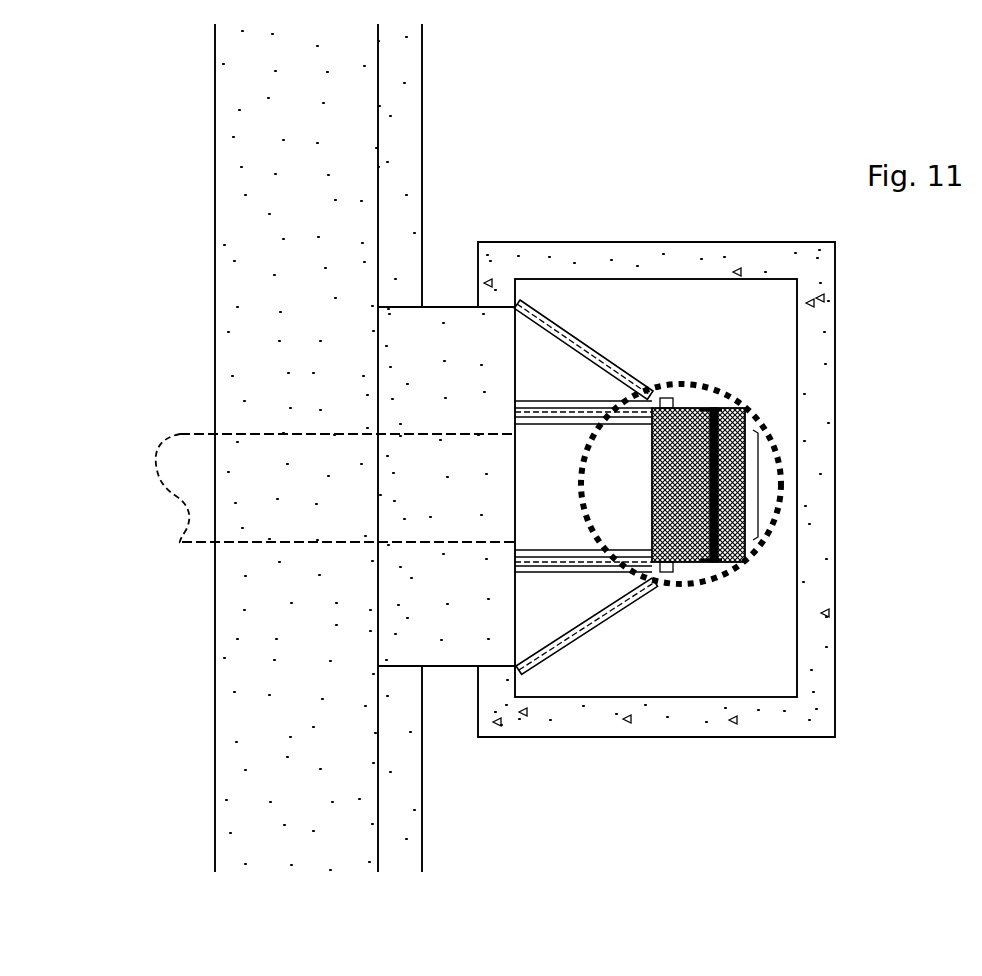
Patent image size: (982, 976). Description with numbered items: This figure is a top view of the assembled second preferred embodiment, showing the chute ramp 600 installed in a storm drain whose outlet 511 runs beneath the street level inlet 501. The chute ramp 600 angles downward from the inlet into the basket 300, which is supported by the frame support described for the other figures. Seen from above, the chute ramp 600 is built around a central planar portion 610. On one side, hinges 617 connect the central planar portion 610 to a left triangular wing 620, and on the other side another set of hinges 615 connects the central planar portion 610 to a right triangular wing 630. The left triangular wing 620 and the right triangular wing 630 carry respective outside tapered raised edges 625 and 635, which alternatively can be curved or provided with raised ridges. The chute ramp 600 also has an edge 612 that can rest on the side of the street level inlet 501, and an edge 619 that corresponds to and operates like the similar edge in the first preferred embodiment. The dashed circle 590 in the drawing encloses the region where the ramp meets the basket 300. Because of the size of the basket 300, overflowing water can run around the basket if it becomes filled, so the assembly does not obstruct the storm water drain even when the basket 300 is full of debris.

The street level inlet 501 is at (300, 335).
The outlet 511 is at (310, 477).
The chute ramp 600 is at (562, 483).
The central planar portion 610 is at (533, 527).
The edge 612 is at (514, 483).
The hinges 615 is at (552, 552).
The hinges 617 is at (547, 417).
The left triangular wing 620 is at (543, 363).
The outside tapered raised edge 625 is at (613, 367).
The outside tapered raised edge 635 is at (605, 605).
The basket 300 is at (743, 452).
The edge 619 is at (652, 505).
The right triangular wing 630 is at (647, 578).
The detail circle 590 is at (714, 387).